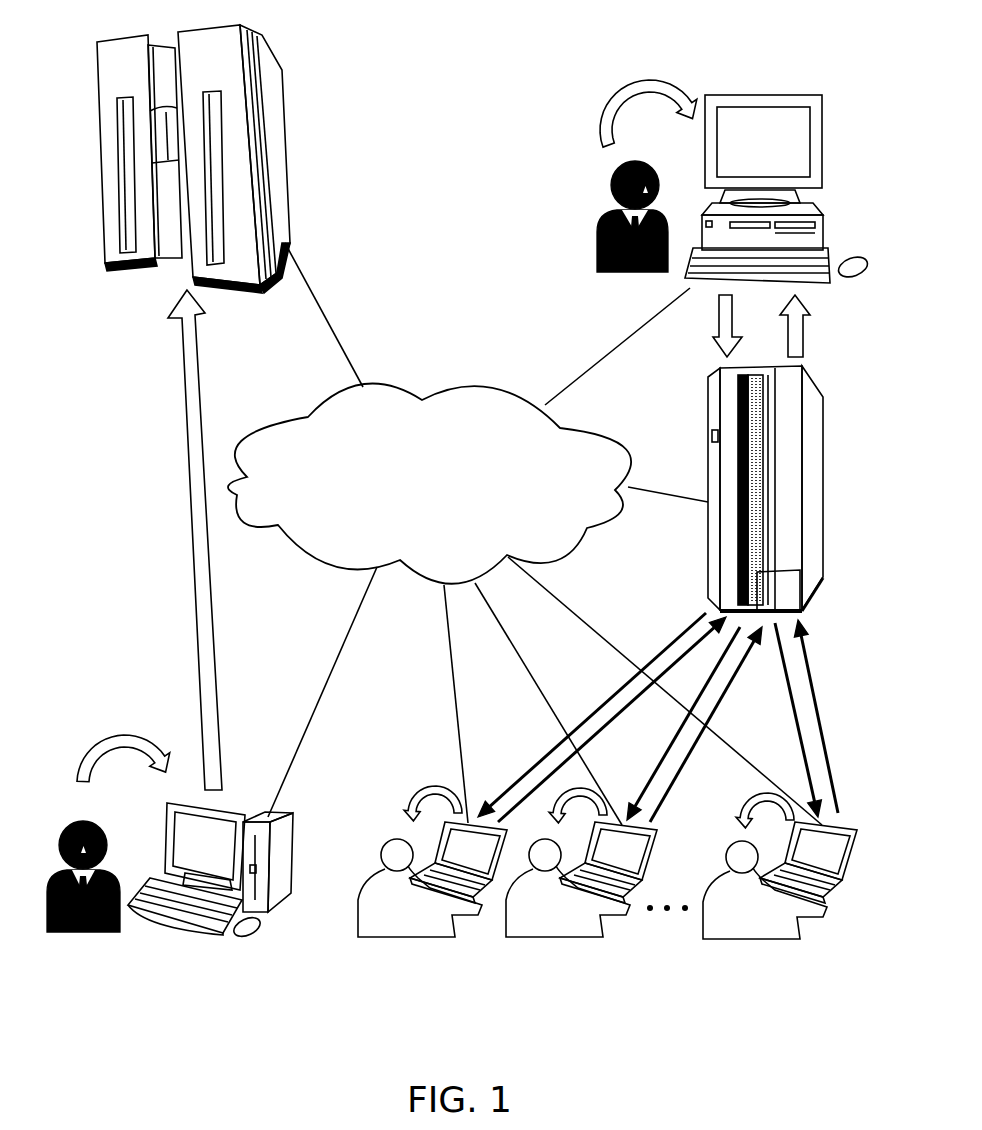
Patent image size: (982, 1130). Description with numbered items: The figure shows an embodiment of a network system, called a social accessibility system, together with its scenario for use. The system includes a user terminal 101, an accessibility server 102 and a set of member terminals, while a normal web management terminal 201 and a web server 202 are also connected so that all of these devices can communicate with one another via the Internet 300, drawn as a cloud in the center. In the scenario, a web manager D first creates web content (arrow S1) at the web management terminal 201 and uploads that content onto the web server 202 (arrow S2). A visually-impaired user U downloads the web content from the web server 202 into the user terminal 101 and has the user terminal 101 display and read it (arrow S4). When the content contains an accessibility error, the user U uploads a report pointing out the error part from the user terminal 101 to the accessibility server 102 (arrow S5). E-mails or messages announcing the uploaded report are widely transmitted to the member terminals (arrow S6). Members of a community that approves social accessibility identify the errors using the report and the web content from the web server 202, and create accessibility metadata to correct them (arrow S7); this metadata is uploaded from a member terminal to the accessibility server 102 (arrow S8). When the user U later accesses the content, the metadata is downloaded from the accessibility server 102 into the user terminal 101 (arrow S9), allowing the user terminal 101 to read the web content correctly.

The user terminal 101 is at (825, 213).
The accessibility server 102 is at (708, 433).
The web management terminal 201 is at (292, 860).
The web server 202 is at (287, 177).
The Internet 300 is at (452, 491).
The visually-impaired user U is at (595, 237).
The web manager D is at (117, 868).
The arrow S1 is at (128, 732).
The arrow S2 is at (190, 443).
The arrow S4 is at (600, 114).
The arrow S5 is at (717, 324).
The arrow S6 is at (663, 651).
The arrow S7 is at (420, 785).
The arrow S8 is at (818, 710).
The arrow S9 is at (803, 332).